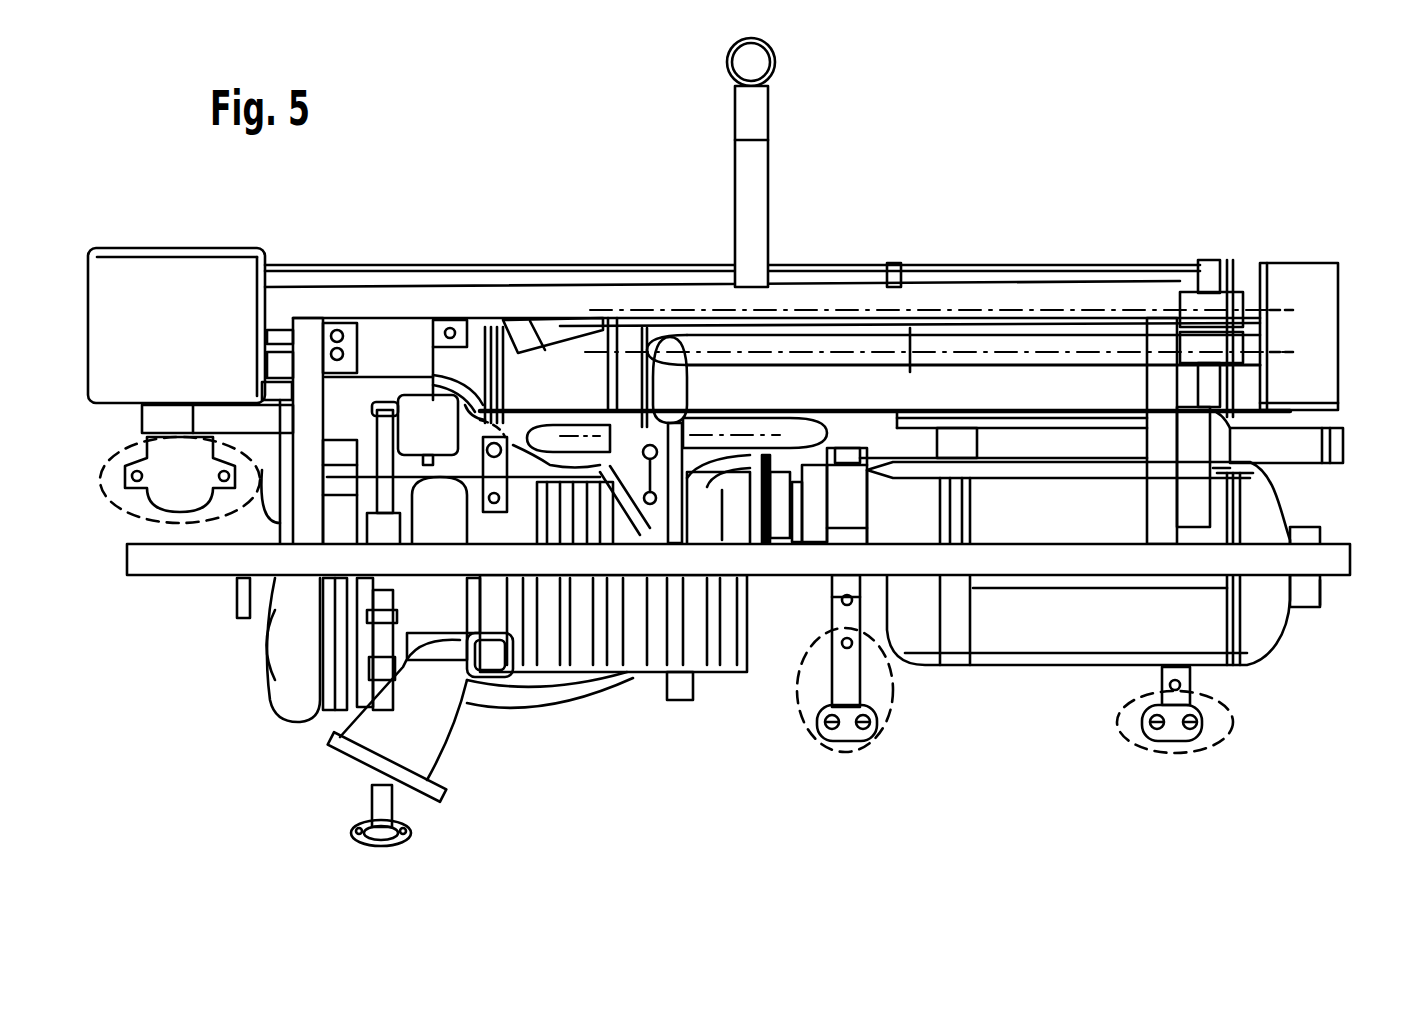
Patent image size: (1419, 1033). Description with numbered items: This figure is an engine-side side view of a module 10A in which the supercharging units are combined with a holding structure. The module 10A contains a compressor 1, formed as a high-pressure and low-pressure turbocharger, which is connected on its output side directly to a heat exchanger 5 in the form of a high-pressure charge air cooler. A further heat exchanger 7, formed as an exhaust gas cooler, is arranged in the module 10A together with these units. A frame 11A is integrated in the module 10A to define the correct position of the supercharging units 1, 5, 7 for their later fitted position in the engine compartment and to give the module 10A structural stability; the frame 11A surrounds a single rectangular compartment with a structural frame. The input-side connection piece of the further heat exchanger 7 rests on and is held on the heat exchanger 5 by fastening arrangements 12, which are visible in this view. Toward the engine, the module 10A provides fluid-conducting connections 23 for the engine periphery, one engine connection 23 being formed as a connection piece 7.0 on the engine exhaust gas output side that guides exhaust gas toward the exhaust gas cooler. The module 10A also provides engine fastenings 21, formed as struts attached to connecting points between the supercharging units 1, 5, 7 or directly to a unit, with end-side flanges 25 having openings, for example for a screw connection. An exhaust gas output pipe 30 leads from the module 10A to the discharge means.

The module 10A is at (1163, 228).
The compressor 1 is at (560, 637).
The heat exchanger 5 is at (1257, 618).
The further heat exchanger 7 is at (561, 398).
The connection piece 7.0 is at (176, 466).
The frame 11A is at (210, 565).
The fastening arrangements 12 is at (1305, 447).
The engine fastenings 21 is at (480, 432).
The fluid-conducting connections 23 is at (114, 500).
The end-side flanges 25 is at (655, 337).
The exhaust gas output pipe 30 is at (428, 728).